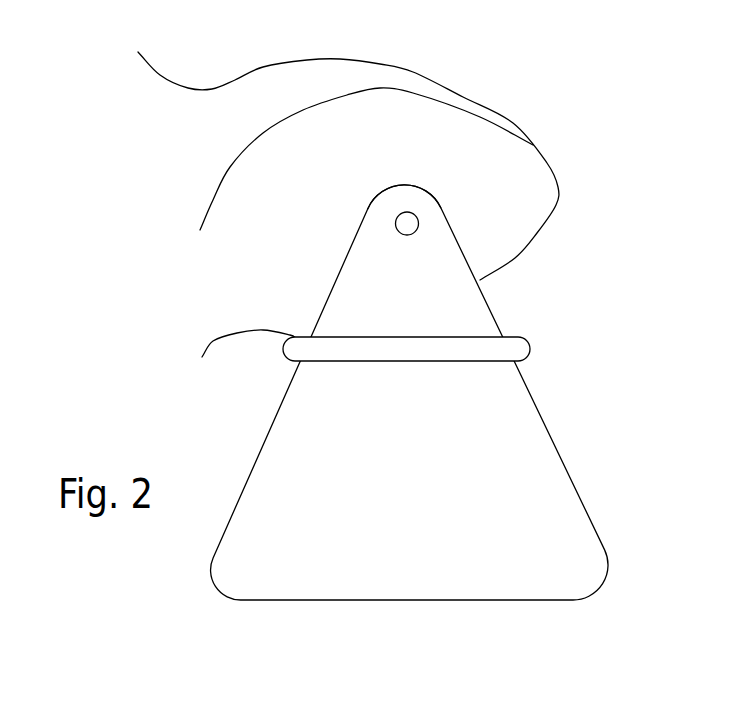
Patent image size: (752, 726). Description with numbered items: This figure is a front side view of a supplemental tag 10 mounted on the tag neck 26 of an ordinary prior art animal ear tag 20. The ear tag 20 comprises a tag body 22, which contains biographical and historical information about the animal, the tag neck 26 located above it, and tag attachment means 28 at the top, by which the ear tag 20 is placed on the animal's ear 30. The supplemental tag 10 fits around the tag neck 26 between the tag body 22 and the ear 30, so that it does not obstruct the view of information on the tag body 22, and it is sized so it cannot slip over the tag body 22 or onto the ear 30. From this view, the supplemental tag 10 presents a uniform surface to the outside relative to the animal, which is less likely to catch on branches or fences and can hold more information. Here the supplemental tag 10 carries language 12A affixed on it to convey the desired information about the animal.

The supplemental tag 10 is at (525, 337).
The language 12A is at (313, 337).
The animal ear tag 20 is at (545, 418).
The tag body 22 is at (421, 507).
The tag neck 26 is at (462, 318).
The tag attachment means 28 is at (403, 221).
The ear 30 is at (477, 162).